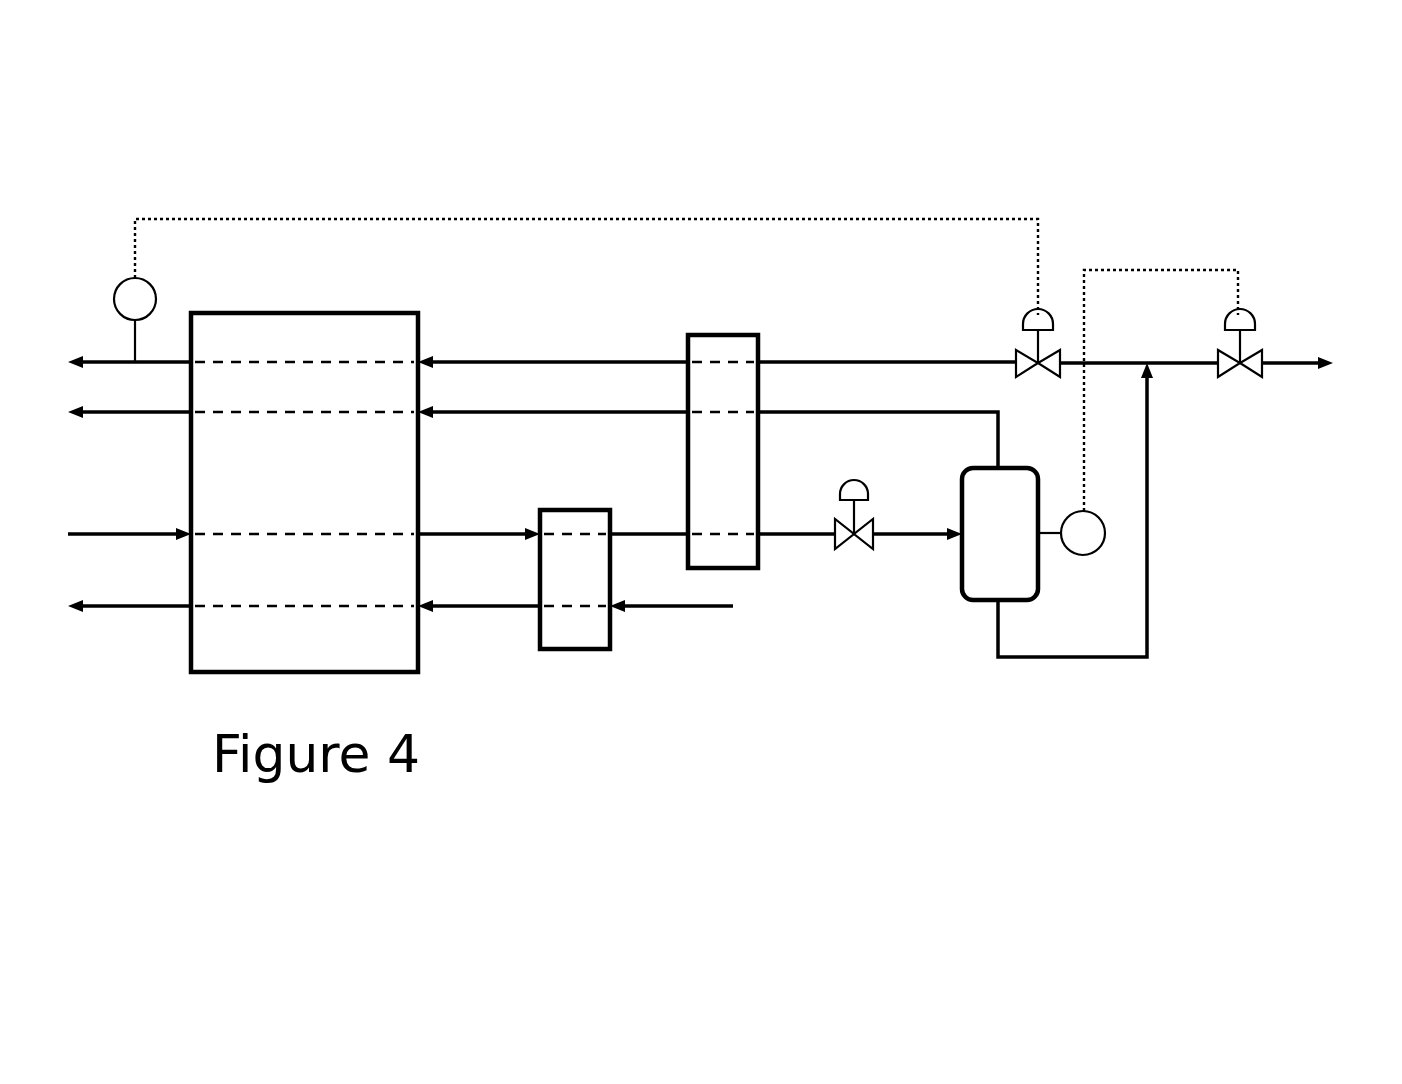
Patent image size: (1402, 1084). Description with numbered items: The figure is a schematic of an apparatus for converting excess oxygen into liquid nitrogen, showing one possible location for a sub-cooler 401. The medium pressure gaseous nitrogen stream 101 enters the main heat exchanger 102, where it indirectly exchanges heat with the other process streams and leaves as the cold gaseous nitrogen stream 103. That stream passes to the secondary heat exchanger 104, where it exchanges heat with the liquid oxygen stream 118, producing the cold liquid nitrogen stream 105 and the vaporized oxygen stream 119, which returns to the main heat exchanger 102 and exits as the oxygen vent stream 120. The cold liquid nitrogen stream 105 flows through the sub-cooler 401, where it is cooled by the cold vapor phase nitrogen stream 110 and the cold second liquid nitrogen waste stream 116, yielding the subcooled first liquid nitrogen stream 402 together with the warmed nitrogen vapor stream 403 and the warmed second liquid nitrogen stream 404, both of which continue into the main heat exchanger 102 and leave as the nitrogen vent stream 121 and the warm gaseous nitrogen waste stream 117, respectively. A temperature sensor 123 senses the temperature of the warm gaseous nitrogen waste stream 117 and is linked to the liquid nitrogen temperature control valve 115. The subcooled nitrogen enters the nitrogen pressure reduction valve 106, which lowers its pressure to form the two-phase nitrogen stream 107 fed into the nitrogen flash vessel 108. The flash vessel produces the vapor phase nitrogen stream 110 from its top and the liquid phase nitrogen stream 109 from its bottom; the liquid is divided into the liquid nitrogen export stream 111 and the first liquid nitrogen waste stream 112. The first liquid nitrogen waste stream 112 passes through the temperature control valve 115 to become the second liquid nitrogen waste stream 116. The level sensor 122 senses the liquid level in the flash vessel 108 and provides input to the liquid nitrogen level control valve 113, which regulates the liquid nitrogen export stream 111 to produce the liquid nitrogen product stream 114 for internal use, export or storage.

The medium pressure gaseous nitrogen stream 101 is at (102, 534).
The main heat exchanger 102 is at (304, 473).
The cold gaseous nitrogen stream 103 is at (479, 551).
The secondary heat exchanger 104 is at (575, 599).
The cold liquid nitrogen stream 105 is at (649, 552).
The nitrogen pressure reduction valve 106 is at (853, 536).
The two-phase nitrogen stream 107 is at (917, 550).
The nitrogen flash vessel 108 is at (1000, 534).
The liquid phase nitrogen stream 109 is at (1101, 510).
The vapor phase nitrogen stream 110 is at (878, 440).
The liquid nitrogen export stream 111 is at (1182, 385).
The first liquid nitrogen waste stream 112 is at (1103, 385).
The liquid nitrogen level control valve 113 is at (1240, 360).
The liquid nitrogen product stream 114 is at (1325, 364).
The liquid nitrogen temperature control valve 115 is at (1038, 360).
The second liquid nitrogen waste stream 116 is at (887, 341).
The warm gaseous nitrogen waste stream 117 is at (102, 362).
The liquid oxygen stream 118 is at (699, 606).
The vaporized oxygen stream 119 is at (479, 625).
The oxygen vent stream 120 is at (102, 606).
The nitrogen vent stream 121 is at (102, 412).
The level sensor 122 is at (1138, 430).
The temperature sensor 123 is at (548, 290).
The sub-cooler 401 is at (723, 451).
The subcooled first liquid nitrogen stream 402 is at (796, 553).
The warmed nitrogen vapor stream 403 is at (553, 427).
The warmed second liquid nitrogen stream 404 is at (553, 345).